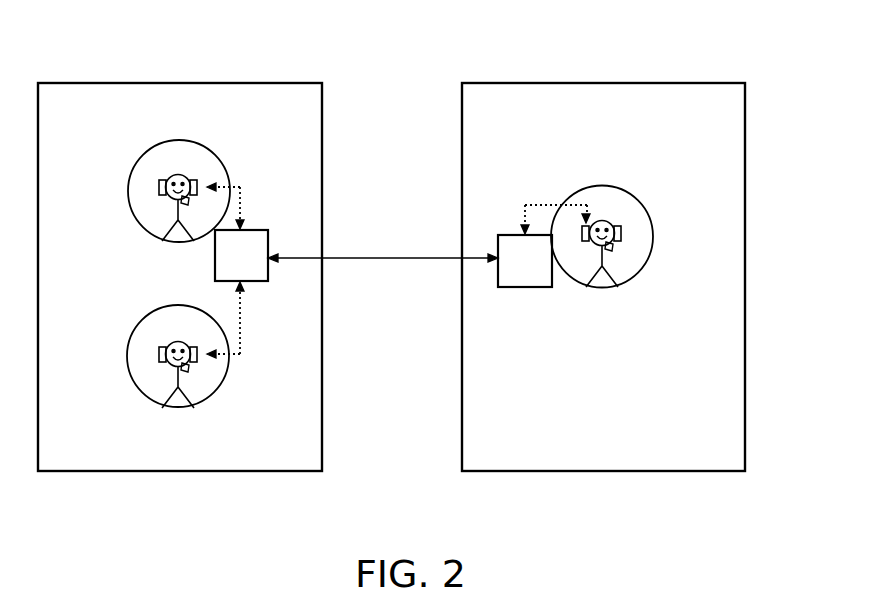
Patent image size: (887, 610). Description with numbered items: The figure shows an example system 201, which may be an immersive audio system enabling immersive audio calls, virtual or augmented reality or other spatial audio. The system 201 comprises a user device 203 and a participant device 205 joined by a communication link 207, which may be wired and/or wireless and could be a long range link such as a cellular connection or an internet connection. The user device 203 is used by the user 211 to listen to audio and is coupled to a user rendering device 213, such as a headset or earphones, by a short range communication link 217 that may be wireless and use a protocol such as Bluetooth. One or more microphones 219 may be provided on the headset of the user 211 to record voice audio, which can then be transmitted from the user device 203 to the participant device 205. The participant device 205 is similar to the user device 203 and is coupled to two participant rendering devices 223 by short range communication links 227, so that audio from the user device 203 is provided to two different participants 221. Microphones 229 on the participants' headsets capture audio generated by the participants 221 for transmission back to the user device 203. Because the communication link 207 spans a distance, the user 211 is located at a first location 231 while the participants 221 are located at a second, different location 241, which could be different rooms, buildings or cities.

The system 201 is at (662, 78).
The user device 203 is at (523, 288).
The participant device 205 is at (255, 283).
The communication link 207 is at (382, 255).
The user 211 is at (612, 277).
The user rendering device 213 is at (622, 237).
The short range communication link 217 is at (525, 203).
The microphone 219 is at (612, 246).
The participant 221 is at (160, 227).
The participant rendering device 223 is at (197, 180).
The short range communication link 227 is at (243, 190).
The microphone 229 is at (190, 198).
The first location 231 is at (597, 455).
The second location 241 is at (229, 453).